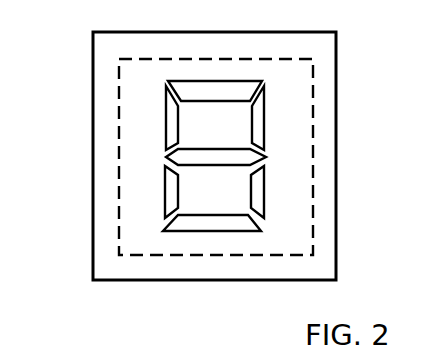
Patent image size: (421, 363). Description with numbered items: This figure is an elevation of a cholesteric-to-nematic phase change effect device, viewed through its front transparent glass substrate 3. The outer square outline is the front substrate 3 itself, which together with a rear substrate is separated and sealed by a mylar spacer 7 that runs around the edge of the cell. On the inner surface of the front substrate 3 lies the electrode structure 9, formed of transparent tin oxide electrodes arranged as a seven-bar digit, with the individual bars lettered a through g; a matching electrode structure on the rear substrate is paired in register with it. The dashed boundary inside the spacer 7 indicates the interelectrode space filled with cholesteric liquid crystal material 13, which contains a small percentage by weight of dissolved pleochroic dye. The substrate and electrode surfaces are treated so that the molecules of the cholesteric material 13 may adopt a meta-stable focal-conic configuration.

The front transparent glass substrate 3 is at (110, 48).
The mylar spacer 7 is at (100, 257).
The electrode structure 9 is at (260, 112).
The cholesteric liquid crystal material 13 is at (280, 160).